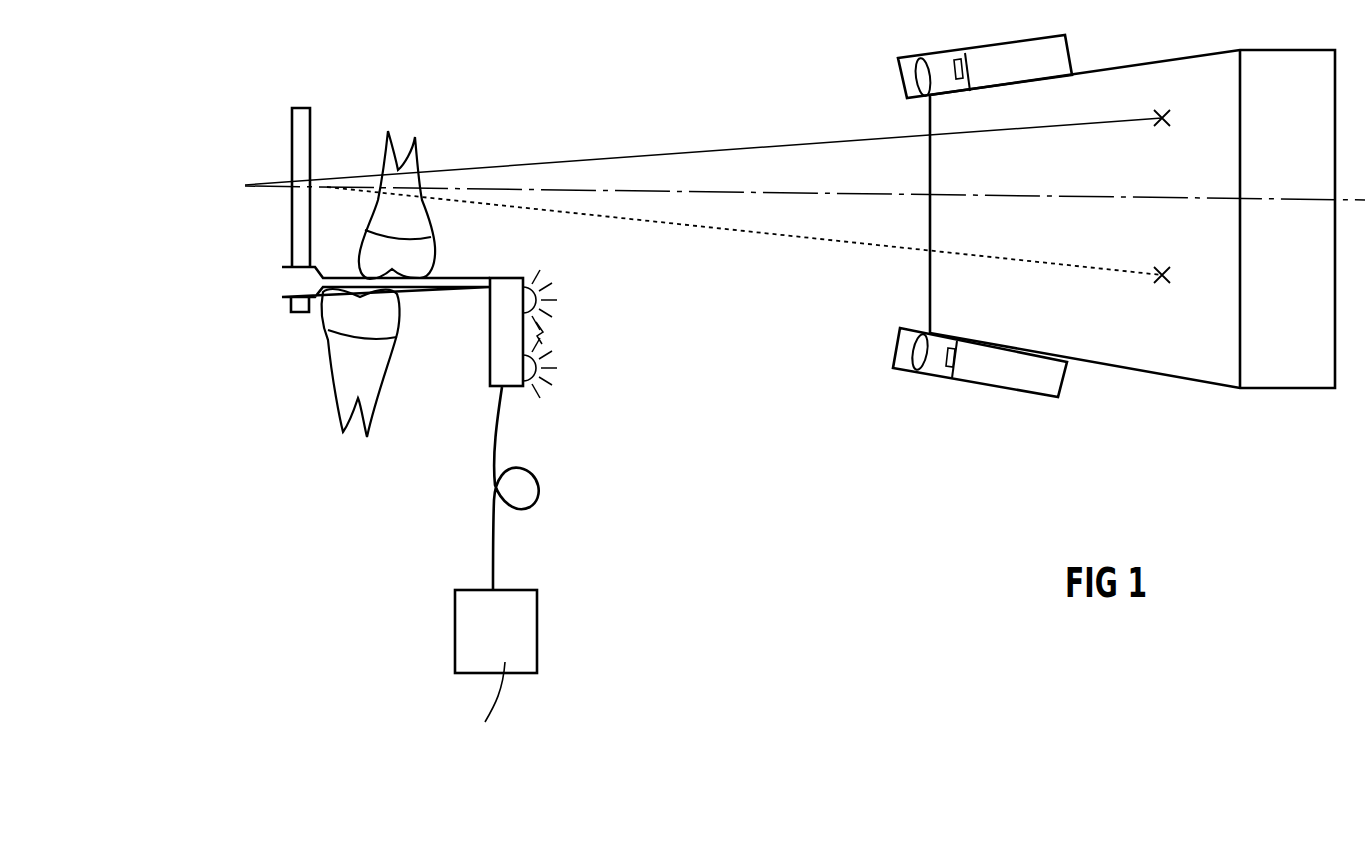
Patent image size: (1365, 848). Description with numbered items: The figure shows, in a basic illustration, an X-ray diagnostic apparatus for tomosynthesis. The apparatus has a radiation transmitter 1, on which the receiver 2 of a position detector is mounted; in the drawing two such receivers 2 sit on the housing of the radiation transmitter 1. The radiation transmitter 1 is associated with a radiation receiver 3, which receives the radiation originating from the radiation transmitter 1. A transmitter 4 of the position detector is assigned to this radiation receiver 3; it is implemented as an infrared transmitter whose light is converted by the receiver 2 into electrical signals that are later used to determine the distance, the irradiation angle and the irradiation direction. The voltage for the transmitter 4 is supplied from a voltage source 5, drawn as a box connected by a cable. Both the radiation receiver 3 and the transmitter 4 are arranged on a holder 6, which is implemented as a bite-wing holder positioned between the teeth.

The radiation transmitter 1 is at (1143, 375).
The receiver 2 is at (1008, 36).
The radiation receiver 3 is at (290, 220).
The transmitter 4 is at (490, 345).
The voltage source 5 is at (540, 637).
The holder 6 is at (488, 278).